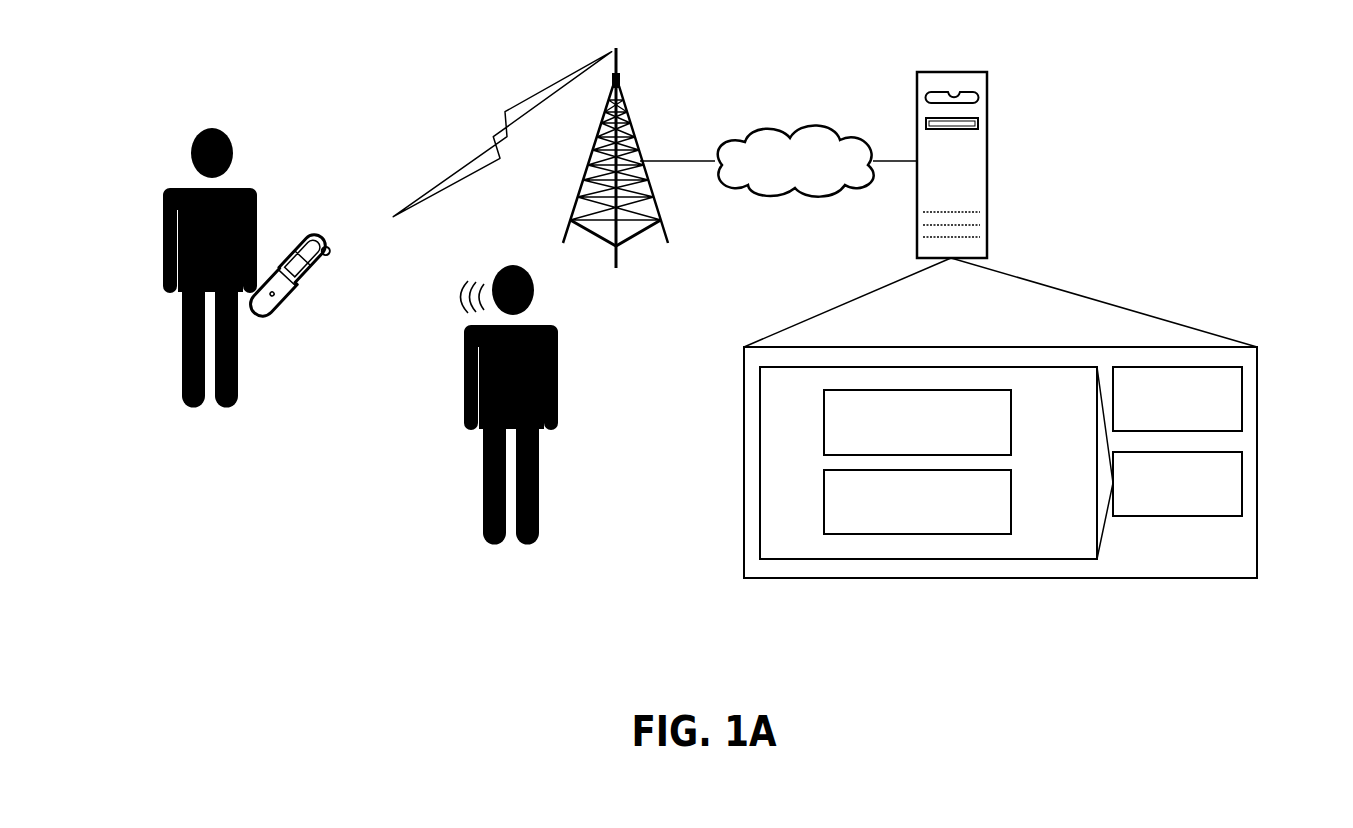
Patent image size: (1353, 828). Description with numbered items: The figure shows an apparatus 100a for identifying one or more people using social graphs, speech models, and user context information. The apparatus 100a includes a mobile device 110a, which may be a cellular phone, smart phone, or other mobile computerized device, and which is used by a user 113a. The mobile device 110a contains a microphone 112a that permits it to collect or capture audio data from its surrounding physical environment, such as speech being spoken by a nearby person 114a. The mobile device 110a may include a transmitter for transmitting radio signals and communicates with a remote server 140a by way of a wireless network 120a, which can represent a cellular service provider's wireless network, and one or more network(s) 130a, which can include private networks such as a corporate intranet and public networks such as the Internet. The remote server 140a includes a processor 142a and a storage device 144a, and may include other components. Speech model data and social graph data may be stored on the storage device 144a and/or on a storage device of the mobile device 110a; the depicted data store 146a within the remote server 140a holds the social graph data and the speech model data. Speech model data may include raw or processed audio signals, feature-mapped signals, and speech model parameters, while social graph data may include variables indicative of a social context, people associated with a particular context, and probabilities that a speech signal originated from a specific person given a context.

The apparatus 100a is at (273, 108).
The mobile device 110a is at (324, 289).
The microphone 112a is at (327, 252).
The user 113a is at (261, 212).
The person 114a is at (559, 362).
The wireless network 120a is at (628, 122).
The network(s) 130a is at (836, 132).
The remote server 140a is at (1033, 306).
The processor 142a is at (1243, 405).
The storage device 144a is at (1243, 490).
The memory 146a is at (911, 365).